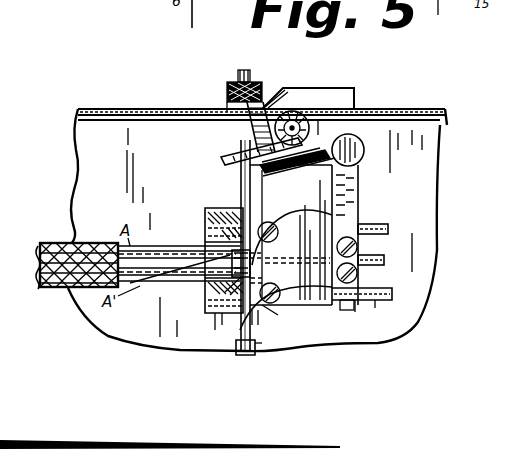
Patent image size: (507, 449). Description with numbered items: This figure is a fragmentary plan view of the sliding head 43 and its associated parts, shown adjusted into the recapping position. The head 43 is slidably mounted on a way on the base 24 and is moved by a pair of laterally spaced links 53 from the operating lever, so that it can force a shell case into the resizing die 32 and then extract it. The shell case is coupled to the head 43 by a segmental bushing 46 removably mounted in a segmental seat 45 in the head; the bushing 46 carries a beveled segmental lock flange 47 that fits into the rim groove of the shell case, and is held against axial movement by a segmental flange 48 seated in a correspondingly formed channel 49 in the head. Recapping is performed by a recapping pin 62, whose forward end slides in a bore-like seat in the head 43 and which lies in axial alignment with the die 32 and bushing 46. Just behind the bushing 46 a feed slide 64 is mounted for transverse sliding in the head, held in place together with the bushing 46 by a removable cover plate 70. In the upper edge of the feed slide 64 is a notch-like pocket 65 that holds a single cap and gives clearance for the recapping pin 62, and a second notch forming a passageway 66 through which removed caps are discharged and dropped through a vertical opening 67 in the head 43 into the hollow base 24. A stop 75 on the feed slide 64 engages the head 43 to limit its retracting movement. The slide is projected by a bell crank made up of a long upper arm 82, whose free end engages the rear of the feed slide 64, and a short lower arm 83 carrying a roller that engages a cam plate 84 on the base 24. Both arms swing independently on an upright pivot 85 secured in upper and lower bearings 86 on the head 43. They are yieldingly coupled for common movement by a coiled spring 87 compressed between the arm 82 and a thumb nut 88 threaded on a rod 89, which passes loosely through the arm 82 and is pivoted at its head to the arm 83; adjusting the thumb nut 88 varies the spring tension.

The base 24 is at (104, 118).
The resizing die 32 is at (80, 241).
The sliding head 43 is at (213, 227).
The segmental seat 45 is at (210, 227).
The segmental bushing 46 is at (207, 290).
The segmental lock flange 47 is at (230, 241).
The segmental flange 48 is at (222, 312).
The channel 49 is at (245, 346).
The links 53 is at (373, 225).
The recapping pin 62 is at (280, 230).
The feed slide 64 is at (324, 351).
The pocket 65 is at (250, 242).
The passageway 66 is at (263, 326).
The vertical opening 67 is at (301, 275).
The cover plate 70 is at (280, 318).
The stop 75 is at (373, 340).
The long upper arm 82 is at (230, 158).
The short lower arm 83 is at (313, 158).
The cam plate 84 is at (282, 91).
The upright pivot 85 is at (356, 153).
The upper and lower bearings 86 is at (352, 200).
The coiled spring 87 is at (232, 116).
The thumb nut 88 is at (227, 95).
The rod 89 is at (243, 70).